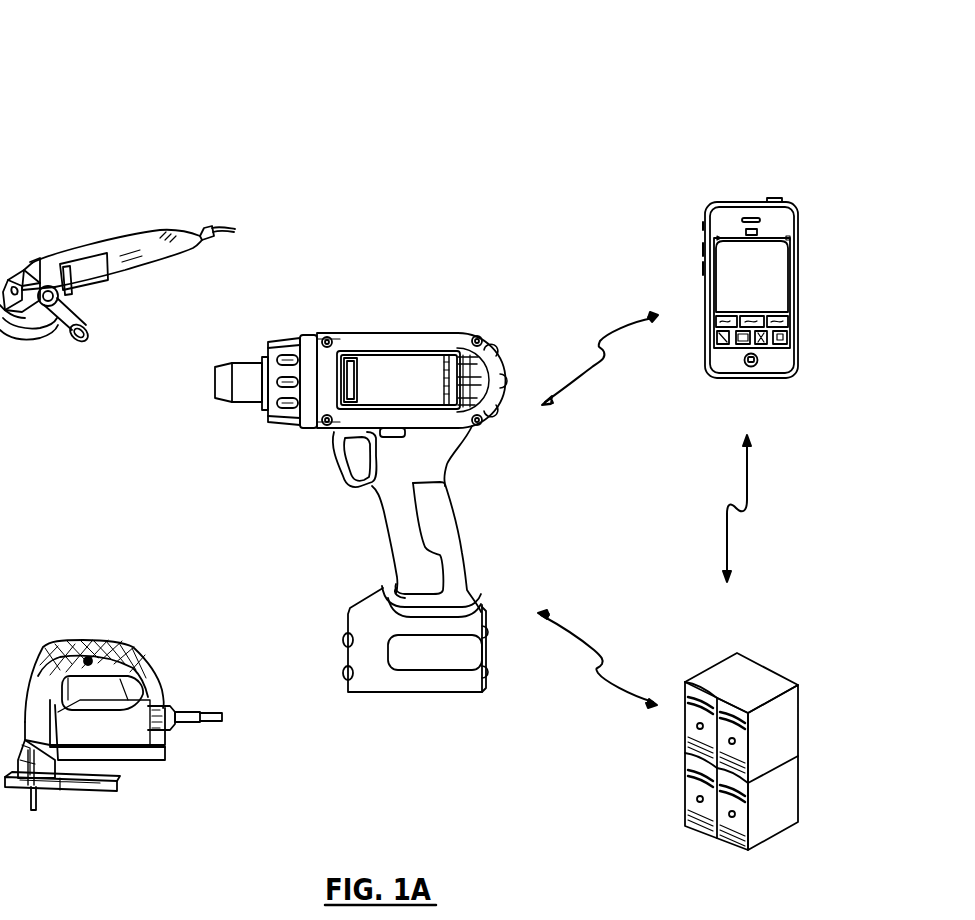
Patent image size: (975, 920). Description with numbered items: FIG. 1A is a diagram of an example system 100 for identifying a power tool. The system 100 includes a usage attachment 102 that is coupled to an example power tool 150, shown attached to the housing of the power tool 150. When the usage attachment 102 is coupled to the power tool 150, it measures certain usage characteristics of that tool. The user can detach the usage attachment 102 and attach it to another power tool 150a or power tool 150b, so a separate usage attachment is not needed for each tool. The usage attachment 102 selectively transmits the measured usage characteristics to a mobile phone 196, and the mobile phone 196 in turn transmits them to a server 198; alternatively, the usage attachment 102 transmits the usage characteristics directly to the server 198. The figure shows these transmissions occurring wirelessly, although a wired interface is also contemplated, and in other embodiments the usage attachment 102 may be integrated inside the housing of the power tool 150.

The system 100 is at (118, 90).
The power tool 150 is at (356, 332).
The power tool 150a is at (145, 230).
The power tool 150b is at (78, 640).
The usage attachment 102 is at (415, 388).
The mobile phone 196 is at (725, 201).
The server 198 is at (781, 672).